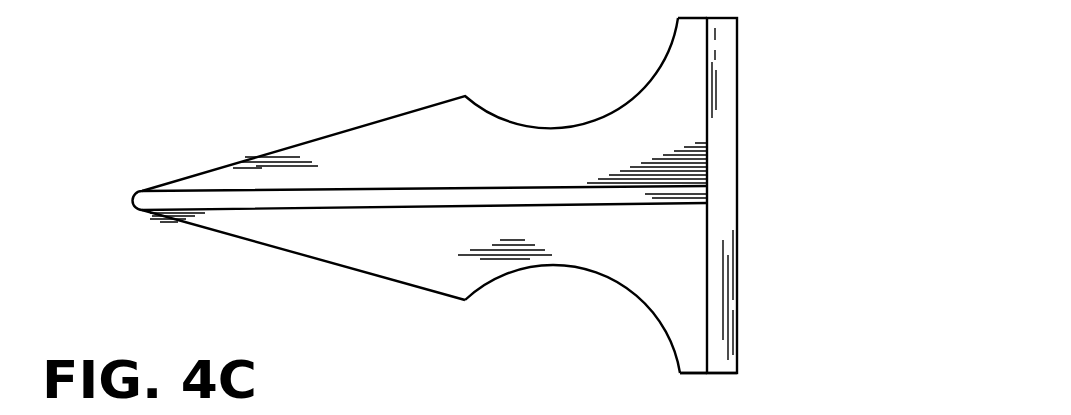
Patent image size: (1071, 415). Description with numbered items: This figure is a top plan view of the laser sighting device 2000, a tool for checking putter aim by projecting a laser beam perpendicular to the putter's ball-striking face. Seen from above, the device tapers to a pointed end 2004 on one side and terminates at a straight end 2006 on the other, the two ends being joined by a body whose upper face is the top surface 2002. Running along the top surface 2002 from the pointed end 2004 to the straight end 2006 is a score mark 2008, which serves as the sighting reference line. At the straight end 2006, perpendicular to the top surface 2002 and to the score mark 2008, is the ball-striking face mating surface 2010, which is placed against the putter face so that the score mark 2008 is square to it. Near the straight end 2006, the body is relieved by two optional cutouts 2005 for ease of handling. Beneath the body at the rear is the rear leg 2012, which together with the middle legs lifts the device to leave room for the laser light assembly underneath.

The laser sighting device 2000 is at (435, 88).
The top surface 2002 is at (408, 267).
The pointed end 2004 is at (170, 183).
The cutouts 2005 is at (555, 268).
The straight end 2006 is at (682, 317).
The score mark 2008 is at (263, 206).
The ball-striking face mating surface 2010 is at (737, 128).
The rear leg 2012 is at (706, 394).